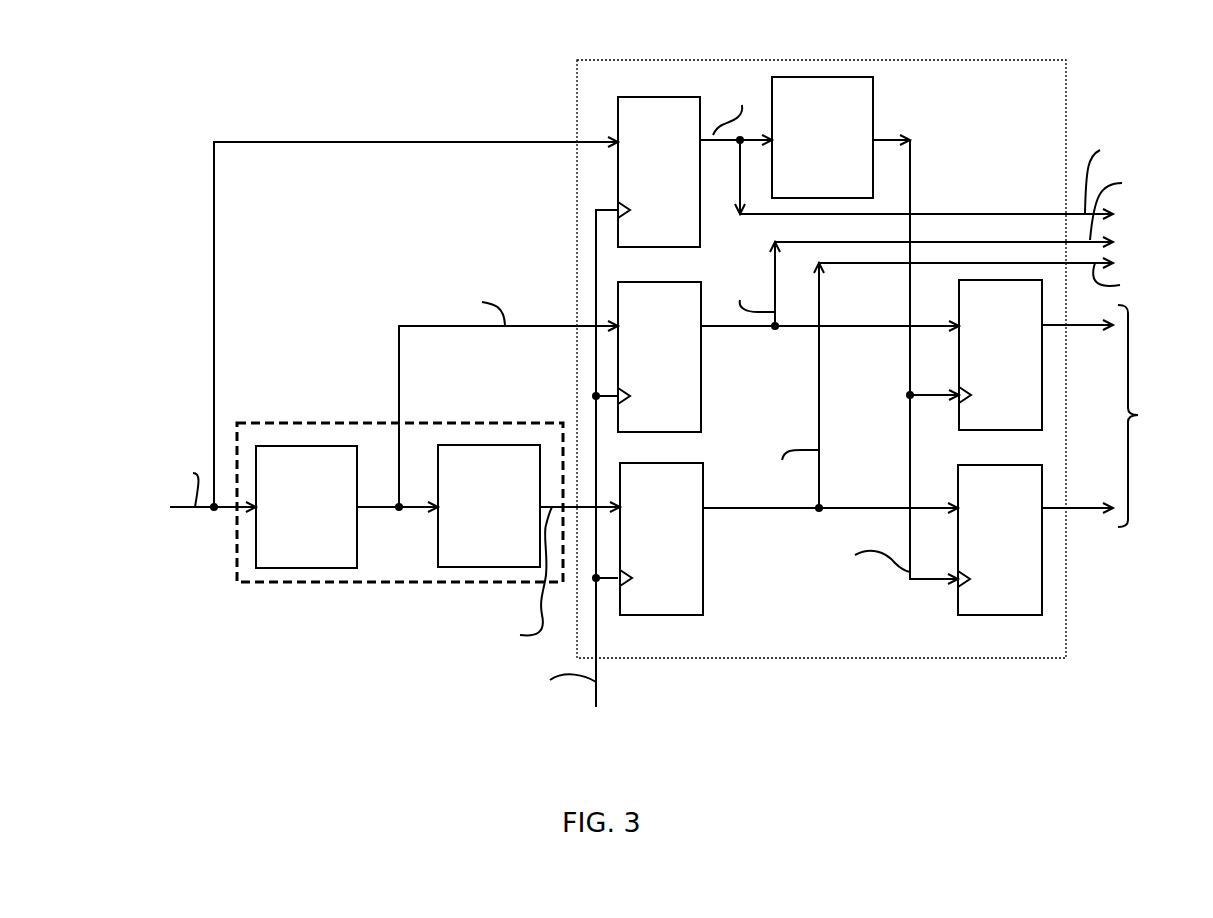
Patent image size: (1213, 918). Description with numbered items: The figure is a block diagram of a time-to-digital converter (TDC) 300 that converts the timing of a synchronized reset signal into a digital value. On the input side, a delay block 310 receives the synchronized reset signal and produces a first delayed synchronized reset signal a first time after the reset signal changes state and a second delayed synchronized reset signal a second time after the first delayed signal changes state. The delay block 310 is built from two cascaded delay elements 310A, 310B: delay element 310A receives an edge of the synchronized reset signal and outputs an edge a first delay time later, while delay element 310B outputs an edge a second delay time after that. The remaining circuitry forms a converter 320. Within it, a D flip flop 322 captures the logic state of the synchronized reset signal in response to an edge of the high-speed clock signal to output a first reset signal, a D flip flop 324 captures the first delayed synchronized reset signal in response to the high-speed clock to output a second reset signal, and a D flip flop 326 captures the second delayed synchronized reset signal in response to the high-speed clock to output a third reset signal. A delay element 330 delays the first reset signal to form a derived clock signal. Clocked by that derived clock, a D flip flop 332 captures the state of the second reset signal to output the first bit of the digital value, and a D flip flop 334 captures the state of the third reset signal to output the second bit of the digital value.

The time-to-digital converter 300 is at (308, 107).
The delay block 310 is at (372, 423).
The delay element 310A is at (309, 446).
The delay element 310B is at (497, 445).
The converter 320 is at (577, 115).
The D flip flop 322 is at (618, 175).
The D flip flop 324 is at (701, 405).
The D flip flop 326 is at (703, 582).
The delay element 330 is at (876, 88).
The D flip flop 332 is at (958, 418).
The D flip flop 334 is at (958, 605).